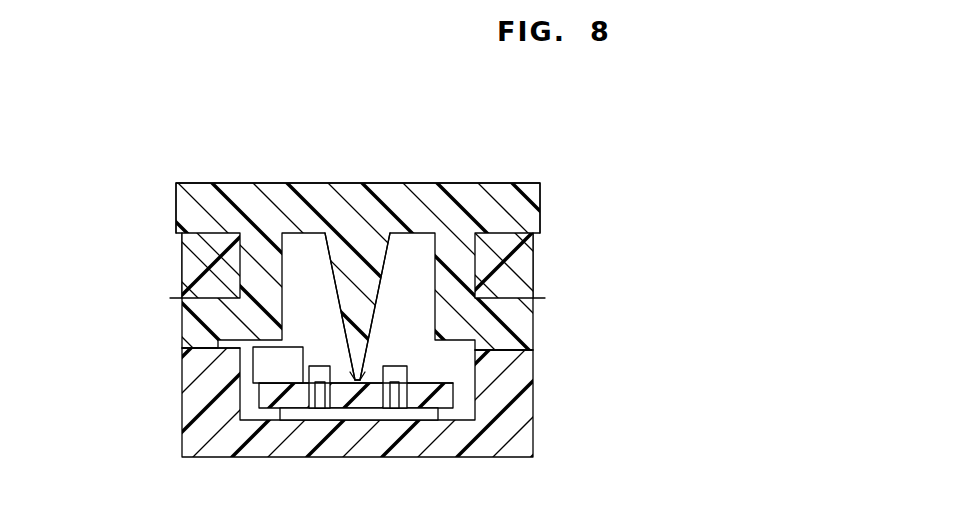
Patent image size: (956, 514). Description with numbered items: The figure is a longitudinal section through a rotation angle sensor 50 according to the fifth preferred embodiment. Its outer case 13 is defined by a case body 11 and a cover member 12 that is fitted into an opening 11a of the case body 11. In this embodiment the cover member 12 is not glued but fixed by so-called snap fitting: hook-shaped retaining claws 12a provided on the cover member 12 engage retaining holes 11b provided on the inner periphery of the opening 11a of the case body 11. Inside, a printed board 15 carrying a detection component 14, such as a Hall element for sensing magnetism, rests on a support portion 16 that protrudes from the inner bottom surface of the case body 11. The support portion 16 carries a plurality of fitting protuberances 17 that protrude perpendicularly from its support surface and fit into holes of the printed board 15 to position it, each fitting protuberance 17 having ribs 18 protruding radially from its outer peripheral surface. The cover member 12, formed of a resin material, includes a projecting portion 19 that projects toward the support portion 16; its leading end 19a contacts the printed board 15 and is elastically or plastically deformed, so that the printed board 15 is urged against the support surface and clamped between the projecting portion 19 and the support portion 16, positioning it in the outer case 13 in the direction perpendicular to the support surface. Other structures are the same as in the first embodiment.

The rotation angle sensor 50 is at (176, 97).
The case body 11 is at (517, 407).
The opening 11a is at (250, 262).
The retaining holes 11b is at (197, 348).
The cover member 12 is at (505, 203).
The retaining claws 12a is at (215, 307).
The outer case 13 is at (160, 460).
The detection component 14 is at (258, 362).
The printed board 15 is at (440, 405).
The support portion 16 is at (358, 420).
The fitting protuberances 17 is at (320, 365).
The ribs 18 is at (303, 397).
The projecting portion 19 is at (358, 279).
The leading end 19a is at (357, 380).